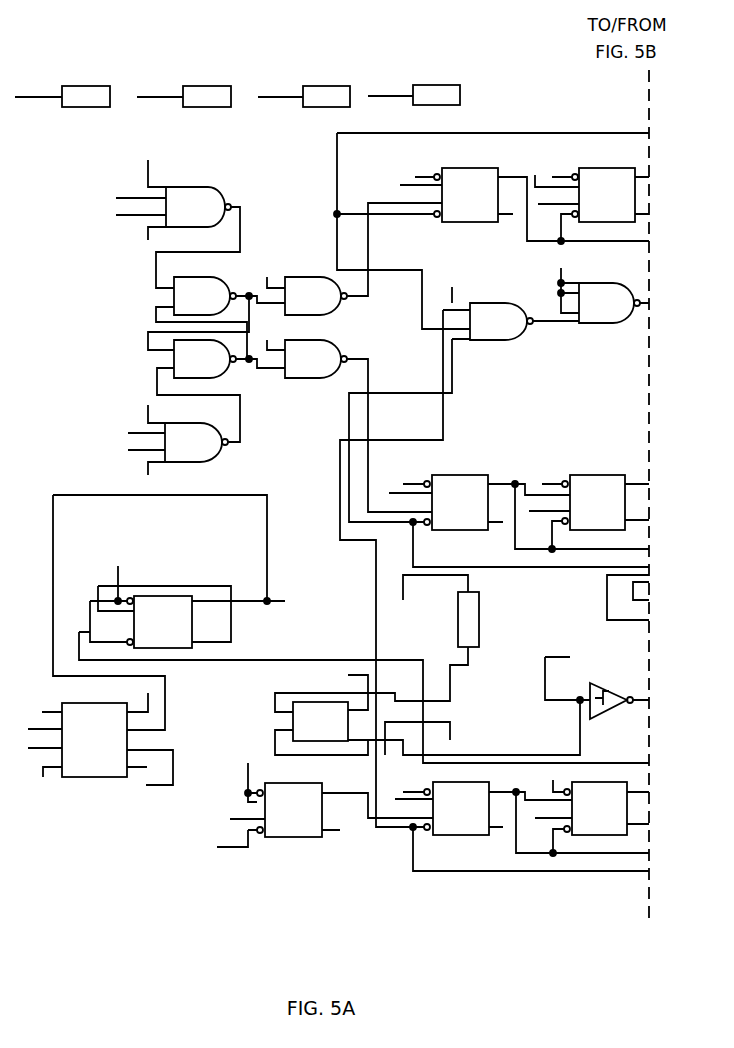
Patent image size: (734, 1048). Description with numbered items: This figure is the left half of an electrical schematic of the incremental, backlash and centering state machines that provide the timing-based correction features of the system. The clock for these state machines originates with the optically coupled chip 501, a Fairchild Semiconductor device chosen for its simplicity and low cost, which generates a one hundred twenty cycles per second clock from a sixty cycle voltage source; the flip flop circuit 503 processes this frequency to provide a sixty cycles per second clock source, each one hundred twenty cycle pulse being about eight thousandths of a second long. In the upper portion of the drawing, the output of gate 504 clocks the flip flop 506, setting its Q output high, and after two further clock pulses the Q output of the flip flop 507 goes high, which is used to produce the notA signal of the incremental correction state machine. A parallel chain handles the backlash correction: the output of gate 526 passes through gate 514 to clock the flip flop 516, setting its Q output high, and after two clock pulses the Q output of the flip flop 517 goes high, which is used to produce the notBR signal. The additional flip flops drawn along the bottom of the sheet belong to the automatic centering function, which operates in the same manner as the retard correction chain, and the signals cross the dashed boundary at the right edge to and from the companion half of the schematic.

The optically coupled chip 501 is at (307, 729).
The flip flop clock divider 503 is at (277, 599).
The gate 504 is at (180, 215).
The flip flop 506 is at (457, 203).
The flip flop 507 is at (594, 203).
The gate 514 is at (297, 367).
The flip flop 516 is at (447, 510).
The flip flop 517 is at (585, 510).
The gate 526 is at (177, 450).